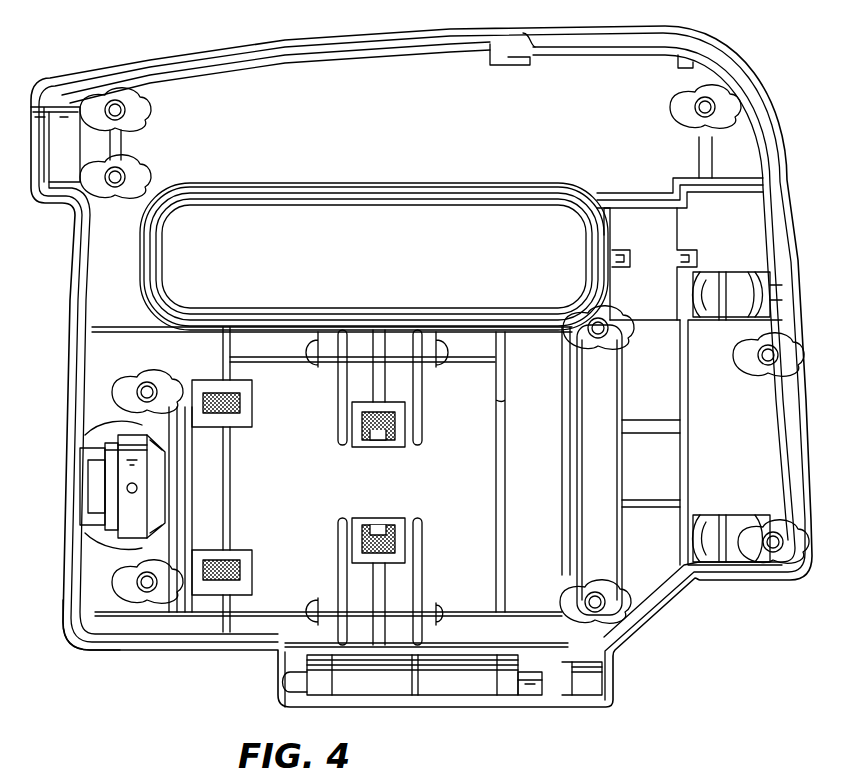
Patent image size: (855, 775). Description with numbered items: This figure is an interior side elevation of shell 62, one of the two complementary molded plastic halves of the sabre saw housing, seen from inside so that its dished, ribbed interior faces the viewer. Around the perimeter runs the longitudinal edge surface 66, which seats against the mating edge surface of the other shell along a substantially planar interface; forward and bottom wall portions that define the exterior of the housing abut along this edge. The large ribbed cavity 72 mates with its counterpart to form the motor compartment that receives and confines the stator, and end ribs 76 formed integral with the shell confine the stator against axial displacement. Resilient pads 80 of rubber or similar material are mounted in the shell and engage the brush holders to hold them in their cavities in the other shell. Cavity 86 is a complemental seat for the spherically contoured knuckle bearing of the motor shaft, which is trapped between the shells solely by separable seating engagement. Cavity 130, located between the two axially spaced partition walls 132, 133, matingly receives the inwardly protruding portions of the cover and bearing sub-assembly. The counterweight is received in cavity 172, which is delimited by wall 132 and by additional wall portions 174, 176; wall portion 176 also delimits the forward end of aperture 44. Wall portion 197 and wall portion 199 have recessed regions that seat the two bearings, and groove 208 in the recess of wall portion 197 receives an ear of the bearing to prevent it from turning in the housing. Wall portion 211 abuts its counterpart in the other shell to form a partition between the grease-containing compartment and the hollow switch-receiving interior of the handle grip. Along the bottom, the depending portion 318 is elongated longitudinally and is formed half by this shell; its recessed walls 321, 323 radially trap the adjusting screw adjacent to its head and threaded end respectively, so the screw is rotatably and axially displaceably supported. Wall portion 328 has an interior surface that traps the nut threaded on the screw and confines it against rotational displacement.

The aperture 44 is at (538, 271).
The shell 62 is at (106, 648).
The longitudinal edge surface 66 is at (276, 46).
The cavity 72 is at (442, 477).
The end ribs 76 is at (314, 366).
The resilient pads 80 is at (243, 402).
The cavity 86 is at (142, 517).
The cavity 130 is at (614, 437).
The partition wall 132 is at (651, 433).
The partition wall 133 is at (565, 398).
The cavity 172 is at (666, 281).
The wall portion 174 is at (690, 378).
The wall portion 176 is at (609, 230).
The wall portion 197 is at (744, 282).
The wall portion 199 is at (755, 518).
The groove 208 is at (728, 318).
The wall portion 211 is at (642, 190).
The depending portion 318 is at (472, 706).
The recessed wall 321 is at (280, 688).
The recessed wall 323 is at (534, 700).
The wall portion 328 is at (572, 700).